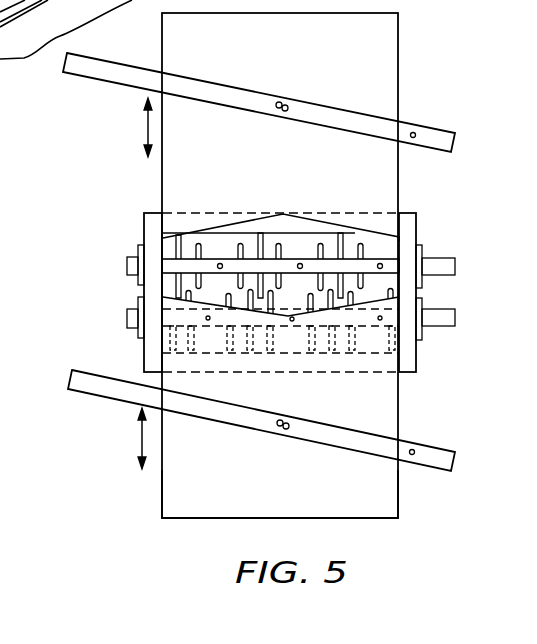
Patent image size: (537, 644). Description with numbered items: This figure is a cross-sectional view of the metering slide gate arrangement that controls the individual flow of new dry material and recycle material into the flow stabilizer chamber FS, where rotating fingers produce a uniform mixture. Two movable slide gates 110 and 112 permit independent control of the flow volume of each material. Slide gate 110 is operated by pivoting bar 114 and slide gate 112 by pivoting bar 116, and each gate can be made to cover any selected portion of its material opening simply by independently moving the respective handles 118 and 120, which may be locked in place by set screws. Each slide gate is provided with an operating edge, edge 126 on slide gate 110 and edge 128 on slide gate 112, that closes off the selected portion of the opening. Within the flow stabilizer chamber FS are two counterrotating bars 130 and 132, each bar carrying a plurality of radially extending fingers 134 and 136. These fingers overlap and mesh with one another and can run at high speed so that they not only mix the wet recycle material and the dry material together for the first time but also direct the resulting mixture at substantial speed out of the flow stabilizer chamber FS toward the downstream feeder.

The slide gate 110 is at (312, 489).
The slide gate 112 is at (303, 178).
The pivoting bar 114 is at (345, 437).
The pivoting bar 116 is at (325, 117).
The handle 118 is at (113, 386).
The handle 120 is at (121, 73).
The operating edge 126 is at (293, 320).
The operating edge 128 is at (281, 217).
The counterrotating bar 130 is at (453, 322).
The counterrotating bar 132 is at (453, 268).
The radially extending fingers 134 is at (219, 301).
The radially extending fingers 136 is at (364, 247).
The flow stabilizer chamber FS is at (426, 217).